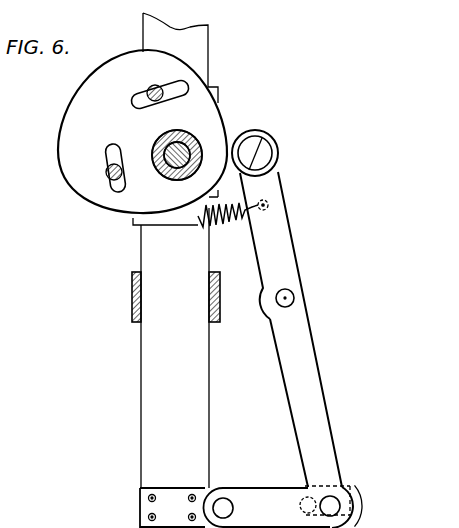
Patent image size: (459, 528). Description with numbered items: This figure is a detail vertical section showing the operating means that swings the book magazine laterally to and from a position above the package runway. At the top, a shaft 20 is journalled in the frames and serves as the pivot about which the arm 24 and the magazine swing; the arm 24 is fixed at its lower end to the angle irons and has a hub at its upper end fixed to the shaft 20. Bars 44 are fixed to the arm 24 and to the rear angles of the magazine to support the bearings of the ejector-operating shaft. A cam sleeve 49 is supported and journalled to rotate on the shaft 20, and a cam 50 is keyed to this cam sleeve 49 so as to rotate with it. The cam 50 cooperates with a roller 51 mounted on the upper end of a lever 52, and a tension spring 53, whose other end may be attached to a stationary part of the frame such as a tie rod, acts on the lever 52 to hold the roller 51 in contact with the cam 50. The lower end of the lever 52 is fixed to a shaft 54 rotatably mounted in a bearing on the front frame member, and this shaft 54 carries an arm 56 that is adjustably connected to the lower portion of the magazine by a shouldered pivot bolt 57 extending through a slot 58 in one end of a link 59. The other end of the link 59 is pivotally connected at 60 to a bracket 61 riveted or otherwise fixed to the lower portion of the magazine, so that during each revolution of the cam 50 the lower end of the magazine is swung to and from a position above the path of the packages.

The shaft 20 is at (152, 148).
The arm 24 is at (147, 387).
The bars 44 is at (132, 318).
The cam sleeve 49 is at (191, 126).
The cam 50 is at (82, 173).
The roller 51 is at (258, 130).
The lever 52 is at (289, 242).
The tension spring 53 is at (233, 231).
The shaft 54 is at (294, 298).
The arm 56 is at (313, 360).
The shouldered pivot bolt 57 is at (338, 498).
The slot 58 is at (300, 506).
The link 59 is at (259, 494).
The pivot connection 60 is at (221, 498).
The bracket 61 is at (139, 500).